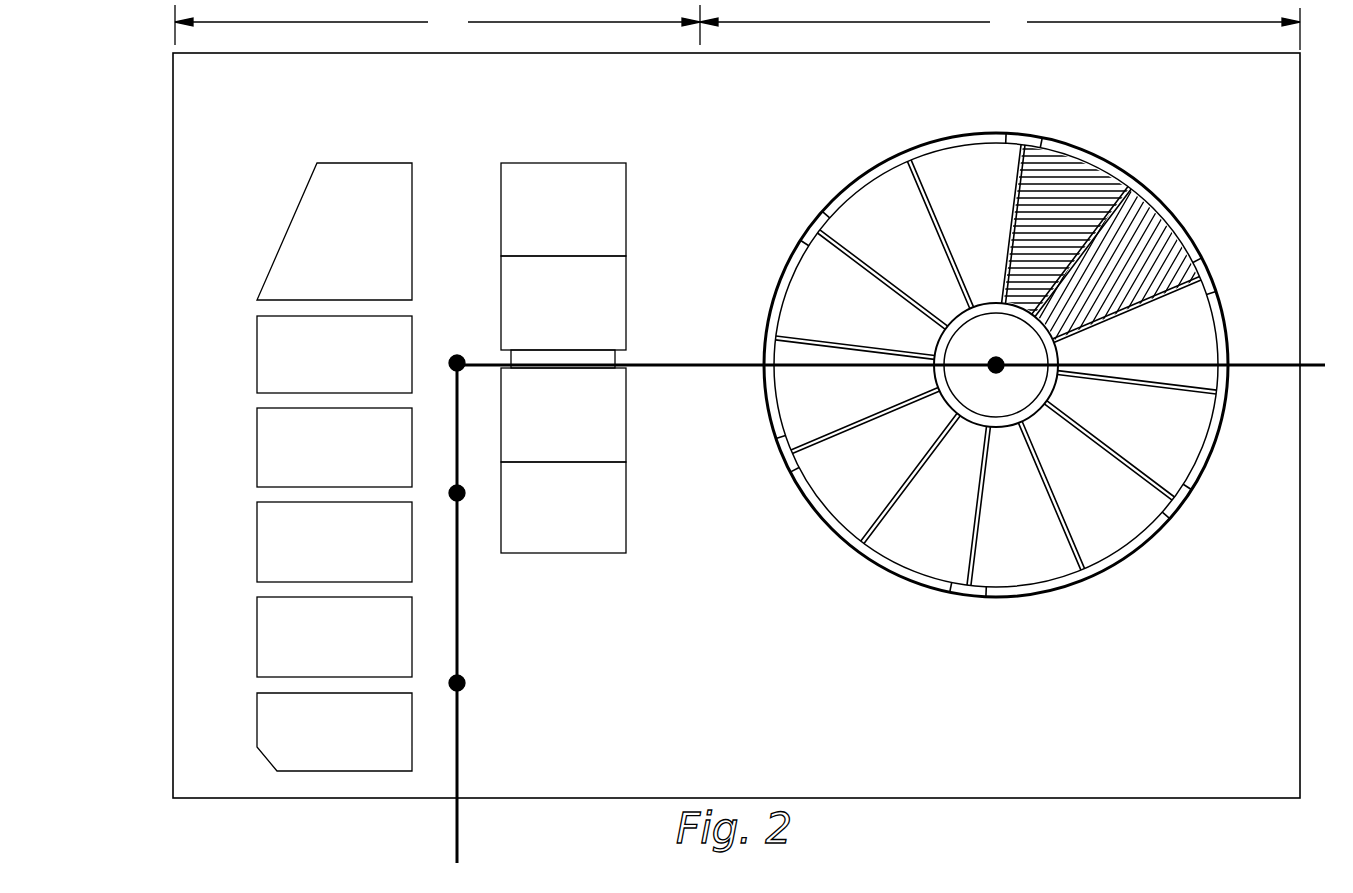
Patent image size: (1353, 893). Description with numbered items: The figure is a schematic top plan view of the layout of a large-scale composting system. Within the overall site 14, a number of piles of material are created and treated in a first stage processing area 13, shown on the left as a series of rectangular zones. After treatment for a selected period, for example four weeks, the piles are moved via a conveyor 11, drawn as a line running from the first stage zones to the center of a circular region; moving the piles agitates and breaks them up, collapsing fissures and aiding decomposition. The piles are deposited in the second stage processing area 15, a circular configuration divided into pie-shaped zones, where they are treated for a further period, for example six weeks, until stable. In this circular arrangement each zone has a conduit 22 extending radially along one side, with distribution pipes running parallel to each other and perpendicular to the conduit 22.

The conveyor 11 is at (1328, 356).
The first stage processing area 13 is at (437, 25).
The sheet 14 is at (173, 446).
The second stage processing area 15 is at (1000, 29).
The conduit 22 is at (1020, 160).